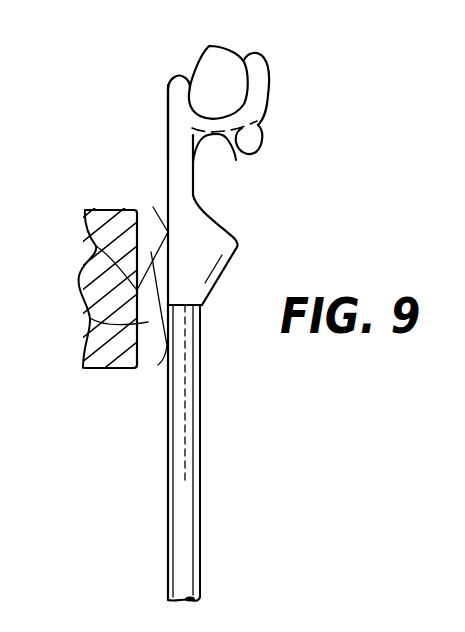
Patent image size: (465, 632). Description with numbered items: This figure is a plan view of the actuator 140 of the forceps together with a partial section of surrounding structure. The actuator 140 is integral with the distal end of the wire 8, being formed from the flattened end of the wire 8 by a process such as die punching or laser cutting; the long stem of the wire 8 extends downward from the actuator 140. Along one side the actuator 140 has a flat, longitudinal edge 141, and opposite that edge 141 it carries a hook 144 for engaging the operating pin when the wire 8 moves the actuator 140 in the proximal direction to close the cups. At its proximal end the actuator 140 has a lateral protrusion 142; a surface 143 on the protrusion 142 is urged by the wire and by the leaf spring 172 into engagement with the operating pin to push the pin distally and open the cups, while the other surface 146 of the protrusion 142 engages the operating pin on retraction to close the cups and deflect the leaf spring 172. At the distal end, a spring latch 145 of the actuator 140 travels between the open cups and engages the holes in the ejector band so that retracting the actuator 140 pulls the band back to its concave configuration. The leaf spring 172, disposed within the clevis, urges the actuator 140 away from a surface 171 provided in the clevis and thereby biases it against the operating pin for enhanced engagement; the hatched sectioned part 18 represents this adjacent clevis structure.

The wire 8 is at (170, 415).
The block 18 is at (100, 208).
The actuator 140 is at (305, 58).
The flat, longitudinal edge 141 is at (167, 143).
The lateral protrusion 142 is at (263, 253).
The surface 143 is at (277, 215).
The hook 144 is at (303, 165).
The spring latch 145 is at (210, 49).
The surface 146 is at (230, 312).
The surface 171 is at (92, 243).
The leaf spring 172 is at (90, 318).